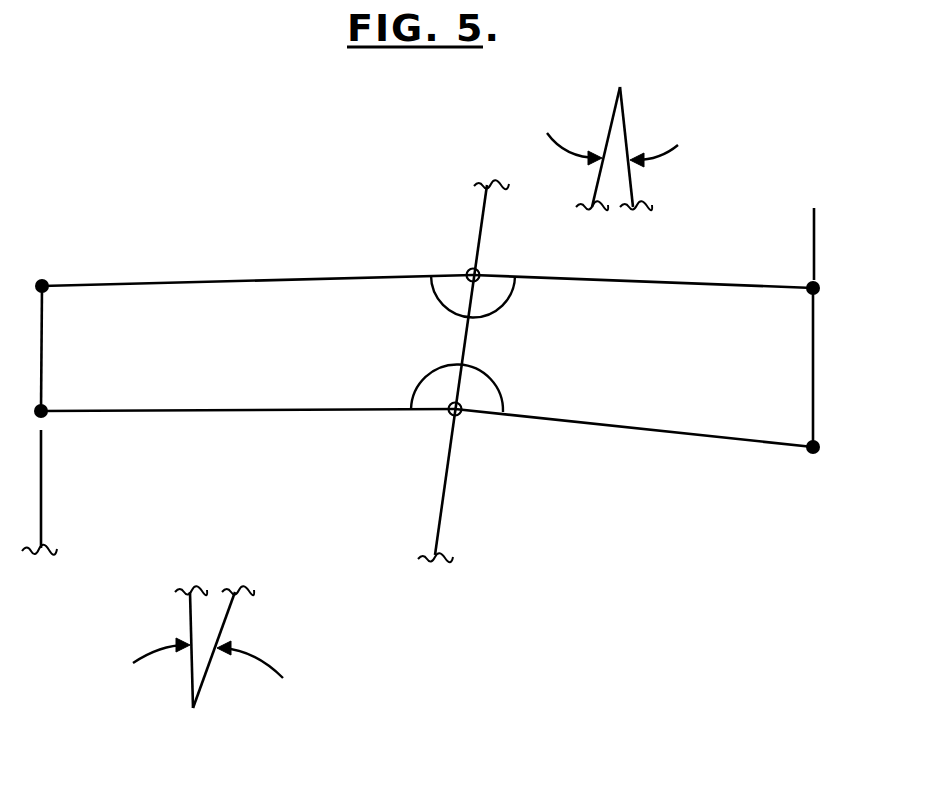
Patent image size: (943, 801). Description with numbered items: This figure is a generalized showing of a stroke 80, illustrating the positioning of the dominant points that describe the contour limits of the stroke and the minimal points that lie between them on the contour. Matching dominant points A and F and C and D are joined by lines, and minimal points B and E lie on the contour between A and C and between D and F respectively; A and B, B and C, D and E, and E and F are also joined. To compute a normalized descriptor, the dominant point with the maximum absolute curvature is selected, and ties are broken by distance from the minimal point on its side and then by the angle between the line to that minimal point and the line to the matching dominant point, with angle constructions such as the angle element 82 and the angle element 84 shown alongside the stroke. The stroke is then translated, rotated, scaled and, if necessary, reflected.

The four-bar linkage kinematic diagram 80 is at (306, 178).
The angle between d1 and d2 82 is at (193, 708).
The angle between d2 and d3 84 is at (620, 87).